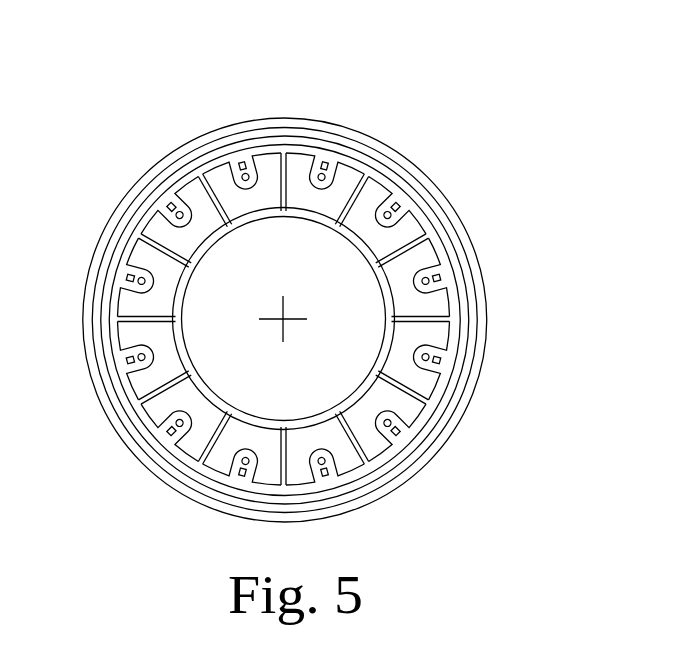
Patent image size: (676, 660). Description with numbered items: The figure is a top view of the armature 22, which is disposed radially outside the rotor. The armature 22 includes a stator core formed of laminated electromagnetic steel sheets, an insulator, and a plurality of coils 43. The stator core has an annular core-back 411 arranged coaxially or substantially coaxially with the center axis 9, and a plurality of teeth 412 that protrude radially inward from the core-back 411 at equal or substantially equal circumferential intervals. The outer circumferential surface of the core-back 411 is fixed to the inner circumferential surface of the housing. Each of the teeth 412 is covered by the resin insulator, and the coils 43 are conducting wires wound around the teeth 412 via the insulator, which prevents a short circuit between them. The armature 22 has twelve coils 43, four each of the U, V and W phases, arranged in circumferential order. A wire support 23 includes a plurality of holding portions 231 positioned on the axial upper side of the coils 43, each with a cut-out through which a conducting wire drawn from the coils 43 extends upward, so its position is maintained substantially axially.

The armature 22 is at (220, 84).
The core-back 411 is at (165, 165).
The wire support 23 is at (473, 257).
The holding portion 231 is at (466, 296).
The teeth 412 is at (347, 244).
The coil 43 is at (351, 190).
The center axis 9 is at (274, 331).